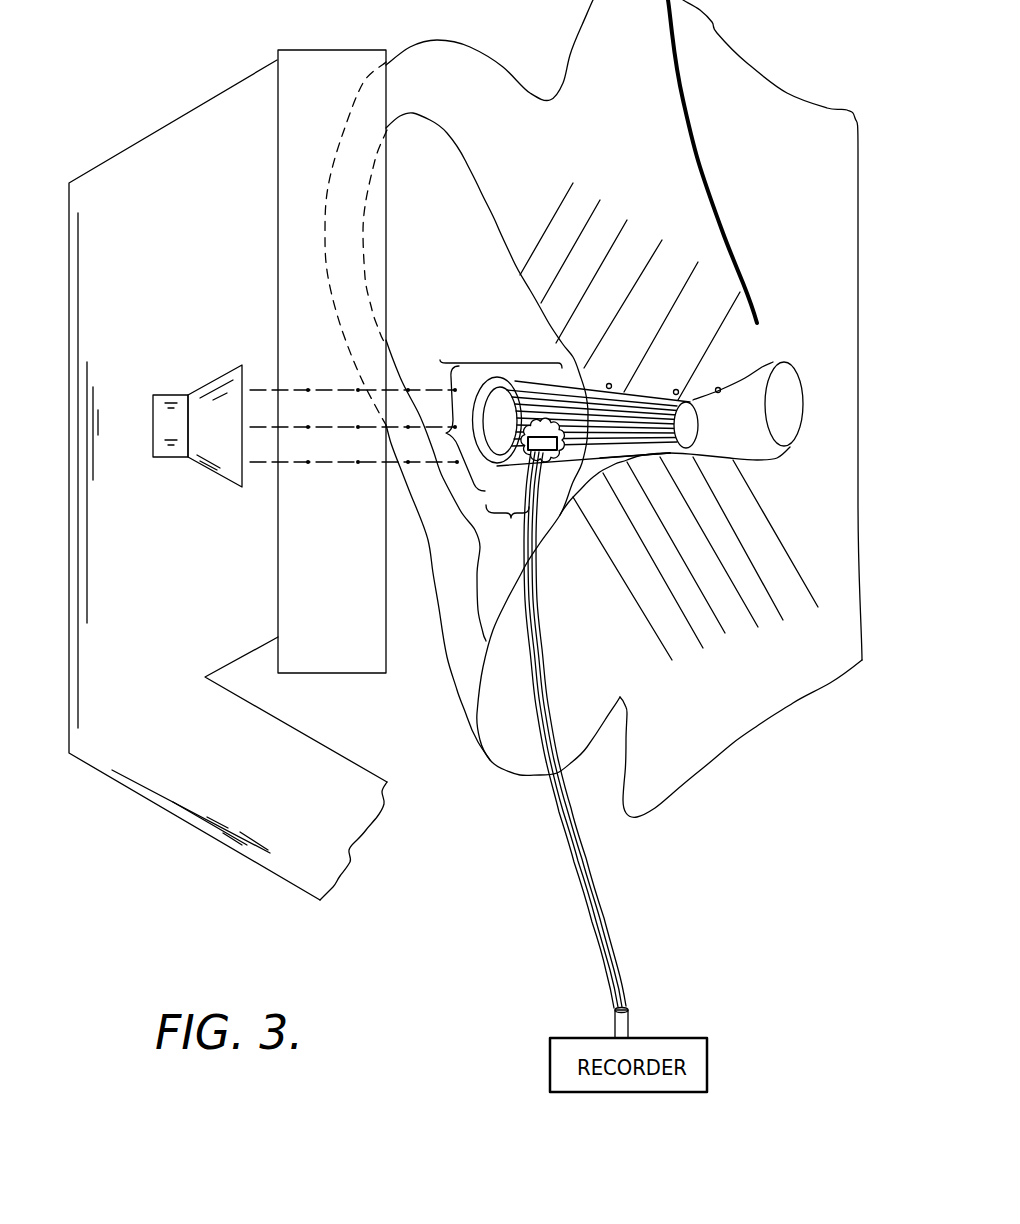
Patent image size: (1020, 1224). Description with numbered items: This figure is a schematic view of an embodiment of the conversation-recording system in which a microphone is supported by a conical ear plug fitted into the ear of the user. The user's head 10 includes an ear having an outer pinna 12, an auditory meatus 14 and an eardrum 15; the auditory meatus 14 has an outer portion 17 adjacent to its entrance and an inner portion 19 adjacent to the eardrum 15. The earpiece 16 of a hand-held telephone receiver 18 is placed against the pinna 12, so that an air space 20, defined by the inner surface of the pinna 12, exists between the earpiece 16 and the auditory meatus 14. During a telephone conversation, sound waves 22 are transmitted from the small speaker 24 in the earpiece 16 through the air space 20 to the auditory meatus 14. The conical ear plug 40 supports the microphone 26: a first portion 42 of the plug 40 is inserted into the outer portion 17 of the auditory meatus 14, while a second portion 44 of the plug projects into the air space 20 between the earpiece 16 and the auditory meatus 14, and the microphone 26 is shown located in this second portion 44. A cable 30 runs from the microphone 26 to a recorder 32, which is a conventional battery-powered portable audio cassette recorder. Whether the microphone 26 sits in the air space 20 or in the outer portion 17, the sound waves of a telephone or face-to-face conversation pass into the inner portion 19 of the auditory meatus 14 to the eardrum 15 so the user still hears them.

The head 10 is at (556, 198).
The pinna 12 is at (458, 67).
The auditory meatus 14 is at (676, 389).
The eardrum 15 is at (766, 416).
The earpiece 16 is at (250, 95).
The outer portion of the auditory meatus 17 is at (609, 383).
The hand-held telephone receiver 18 is at (130, 95).
The inner portion of the auditory meatus 19 is at (718, 387).
The air space 20 is at (526, 506).
The sound waves 22 is at (290, 390).
The small speaker 24 is at (200, 398).
The microphone 26 is at (549, 451).
The cable 30 is at (577, 850).
The recorder 32 is at (580, 1046).
The conical ear plug 40 is at (540, 378).
The first portion of the plug 42 is at (638, 452).
The second portion of the plug 44 is at (518, 390).